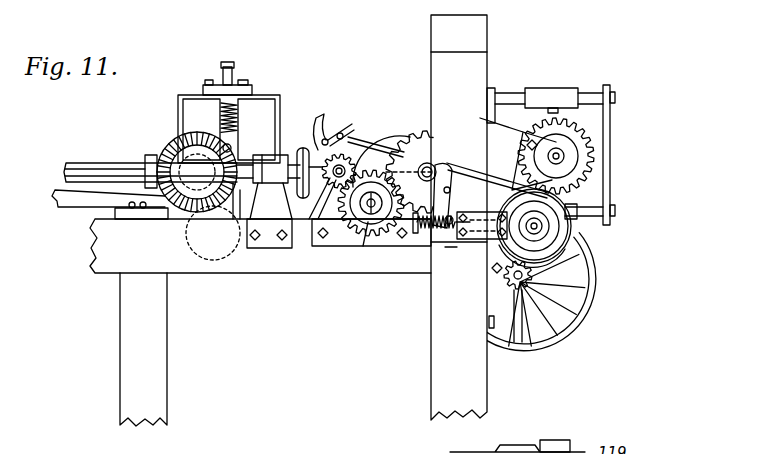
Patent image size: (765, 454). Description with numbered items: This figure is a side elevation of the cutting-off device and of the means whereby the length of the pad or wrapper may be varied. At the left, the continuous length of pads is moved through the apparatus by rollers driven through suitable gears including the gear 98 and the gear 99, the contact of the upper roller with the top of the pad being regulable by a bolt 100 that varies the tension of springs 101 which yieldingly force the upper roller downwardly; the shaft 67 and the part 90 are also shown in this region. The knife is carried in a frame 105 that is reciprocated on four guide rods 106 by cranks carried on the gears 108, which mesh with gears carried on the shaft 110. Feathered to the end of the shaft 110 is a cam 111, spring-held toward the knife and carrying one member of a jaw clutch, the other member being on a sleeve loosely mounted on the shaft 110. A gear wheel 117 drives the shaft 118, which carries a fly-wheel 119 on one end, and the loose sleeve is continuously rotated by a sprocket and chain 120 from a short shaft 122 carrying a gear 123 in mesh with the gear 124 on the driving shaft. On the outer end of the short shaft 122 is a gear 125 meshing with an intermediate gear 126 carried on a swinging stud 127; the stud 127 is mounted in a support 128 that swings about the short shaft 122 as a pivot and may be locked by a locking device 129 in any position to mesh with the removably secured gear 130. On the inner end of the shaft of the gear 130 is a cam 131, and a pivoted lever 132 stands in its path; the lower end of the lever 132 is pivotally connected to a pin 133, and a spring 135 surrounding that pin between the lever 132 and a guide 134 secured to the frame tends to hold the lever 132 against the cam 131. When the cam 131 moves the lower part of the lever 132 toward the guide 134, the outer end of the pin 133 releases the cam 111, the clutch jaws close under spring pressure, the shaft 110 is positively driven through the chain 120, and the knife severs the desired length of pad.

The shaft 67 is at (97, 166).
The cam 90 is at (205, 262).
The gear 98 is at (178, 142).
The gear 99 is at (167, 153).
The bolt 100 is at (247, 60).
The springs 101 is at (236, 112).
The frame 105 is at (572, 92).
The guide rods 106 is at (596, 103).
The gears 108 is at (583, 150).
The shaft 110 is at (540, 228).
The cam 111 is at (598, 218).
The gear wheel 117 is at (562, 328).
The shaft 118 is at (532, 279).
The fly-wheel 119 is at (514, 347).
The sprocket and chain 120 is at (562, 250).
The short shaft 122 is at (337, 222).
The gear 123 is at (362, 157).
The gear 124 is at (307, 137).
The gear 125 is at (335, 180).
The intermediate gear 126 is at (368, 225).
The swinging stud 127 is at (366, 230).
The support 128 is at (368, 123).
The locking device 129 is at (338, 124).
The gear 130 is at (423, 130).
The cam 131 is at (457, 168).
The pivoted lever 132 is at (447, 165).
The pin 133 is at (427, 230).
The guide 134 is at (417, 237).
The spring 135 is at (455, 232).